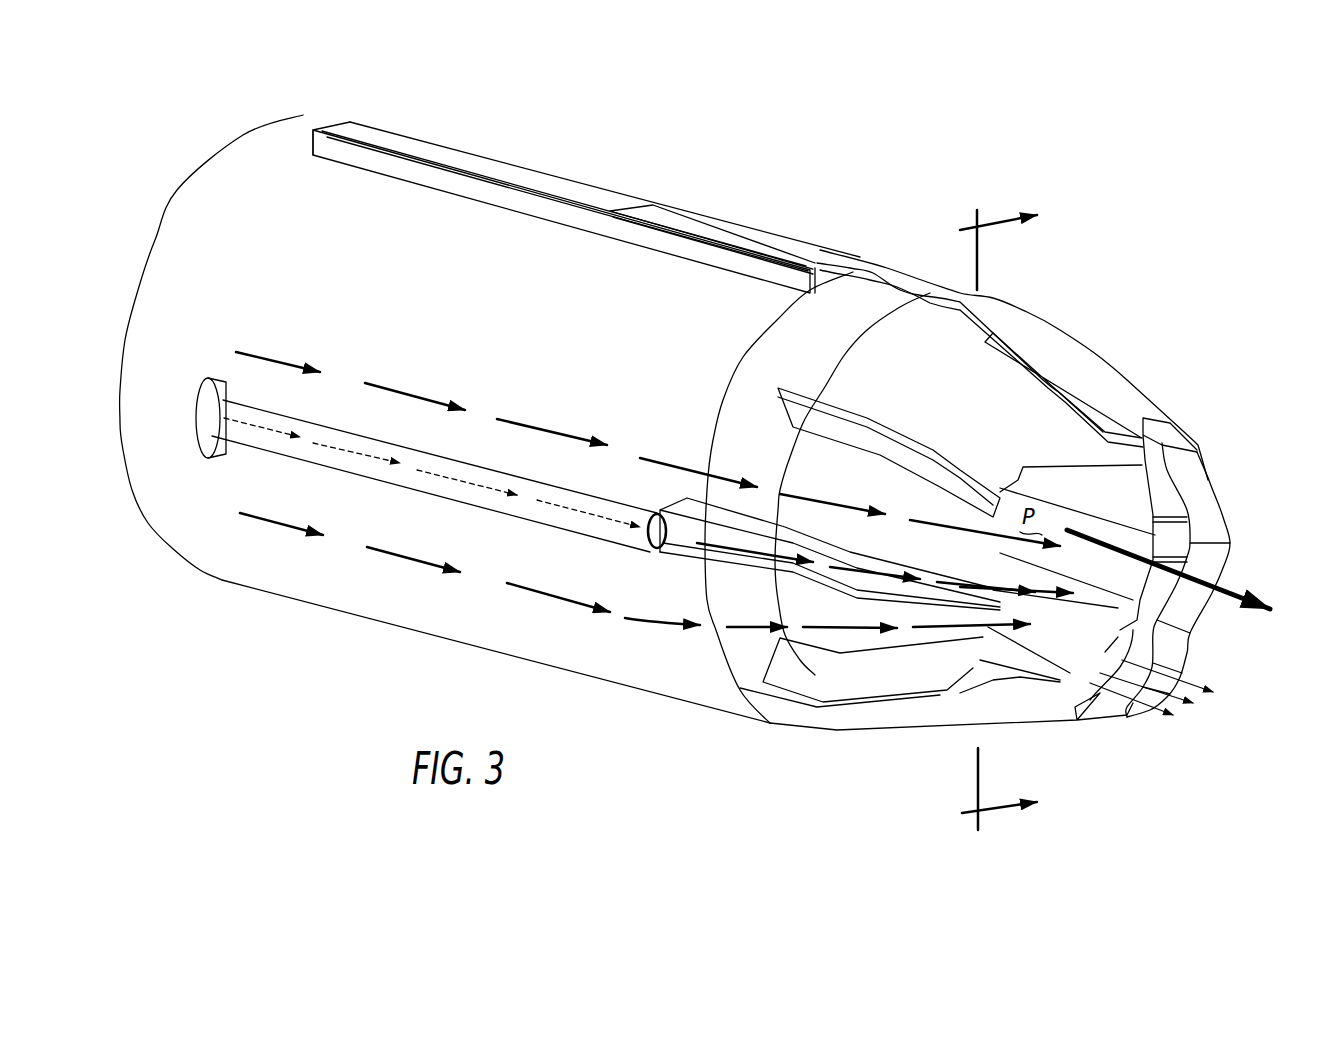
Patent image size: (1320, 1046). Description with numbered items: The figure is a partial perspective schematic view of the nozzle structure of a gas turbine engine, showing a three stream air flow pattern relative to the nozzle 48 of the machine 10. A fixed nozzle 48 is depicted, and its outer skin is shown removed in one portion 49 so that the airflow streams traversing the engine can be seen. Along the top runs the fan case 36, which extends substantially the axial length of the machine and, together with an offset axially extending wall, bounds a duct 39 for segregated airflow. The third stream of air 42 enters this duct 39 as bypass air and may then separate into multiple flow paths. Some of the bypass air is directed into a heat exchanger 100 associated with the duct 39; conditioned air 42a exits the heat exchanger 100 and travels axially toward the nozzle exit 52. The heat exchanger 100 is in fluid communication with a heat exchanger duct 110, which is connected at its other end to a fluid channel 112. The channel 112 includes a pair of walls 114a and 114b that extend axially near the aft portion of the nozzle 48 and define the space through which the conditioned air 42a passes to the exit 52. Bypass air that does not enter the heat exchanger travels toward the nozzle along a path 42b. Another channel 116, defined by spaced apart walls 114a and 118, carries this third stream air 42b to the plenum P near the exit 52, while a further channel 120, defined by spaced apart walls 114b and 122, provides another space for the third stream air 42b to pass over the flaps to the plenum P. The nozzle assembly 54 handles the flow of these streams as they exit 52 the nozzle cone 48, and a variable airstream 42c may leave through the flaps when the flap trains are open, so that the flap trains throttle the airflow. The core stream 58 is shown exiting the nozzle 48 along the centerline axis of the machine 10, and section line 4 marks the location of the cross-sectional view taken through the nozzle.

The machine 10 is at (850, 160).
The fan case 36 is at (588, 206).
The duct 39 is at (322, 152).
The third stream of air 42 is at (208, 232).
The conditioned air 42a is at (360, 476).
The path 42b is at (410, 392).
The variable airstream 42c is at (1168, 716).
The nozzle 48 is at (1102, 368).
The portion 49 is at (180, 290).
The nozzle exit 52 is at (1183, 712).
The nozzle assembly 54 is at (1235, 490).
The core stream 58 is at (1242, 593).
The heat exchanger 100 is at (185, 443).
The heat exchanger duct 110 is at (296, 458).
The fluid channel 112 is at (657, 513).
The wall 114a is at (718, 512).
The wall 114b is at (750, 580).
The channel 116 is at (832, 484).
The wall 118 is at (797, 417).
The channel 120 is at (847, 613).
The wall 122 is at (863, 702).
The section line 4- 4 is at (989, 520).